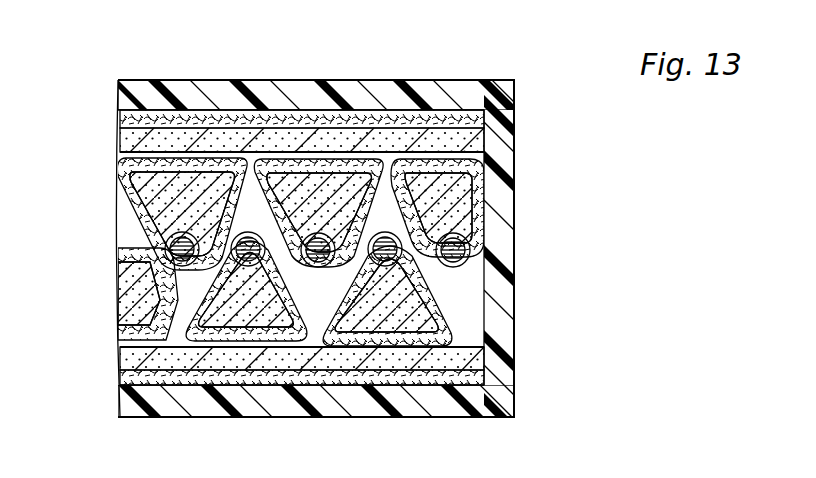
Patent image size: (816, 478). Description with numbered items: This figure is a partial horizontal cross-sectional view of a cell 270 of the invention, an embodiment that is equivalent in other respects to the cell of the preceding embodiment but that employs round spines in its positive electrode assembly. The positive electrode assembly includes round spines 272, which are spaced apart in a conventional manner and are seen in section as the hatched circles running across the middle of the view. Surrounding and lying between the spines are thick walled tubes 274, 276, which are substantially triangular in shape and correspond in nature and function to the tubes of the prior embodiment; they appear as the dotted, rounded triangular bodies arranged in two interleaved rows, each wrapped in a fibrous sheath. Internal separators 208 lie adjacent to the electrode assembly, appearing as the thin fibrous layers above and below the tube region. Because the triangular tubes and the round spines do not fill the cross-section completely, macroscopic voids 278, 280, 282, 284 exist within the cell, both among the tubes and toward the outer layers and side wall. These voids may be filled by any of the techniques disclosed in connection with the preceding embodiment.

The cell 270 is at (545, 166).
The round spine 272 is at (120, 270).
The thick walled tube 274 is at (125, 160).
The thick walled tube 276 is at (483, 215).
The macroscopic void 278 is at (337, 172).
The macroscopic void 280 is at (248, 175).
The macroscopic void 282 is at (483, 152).
The macroscopic void 284 is at (468, 316).
The internal separator 208 is at (120, 386).